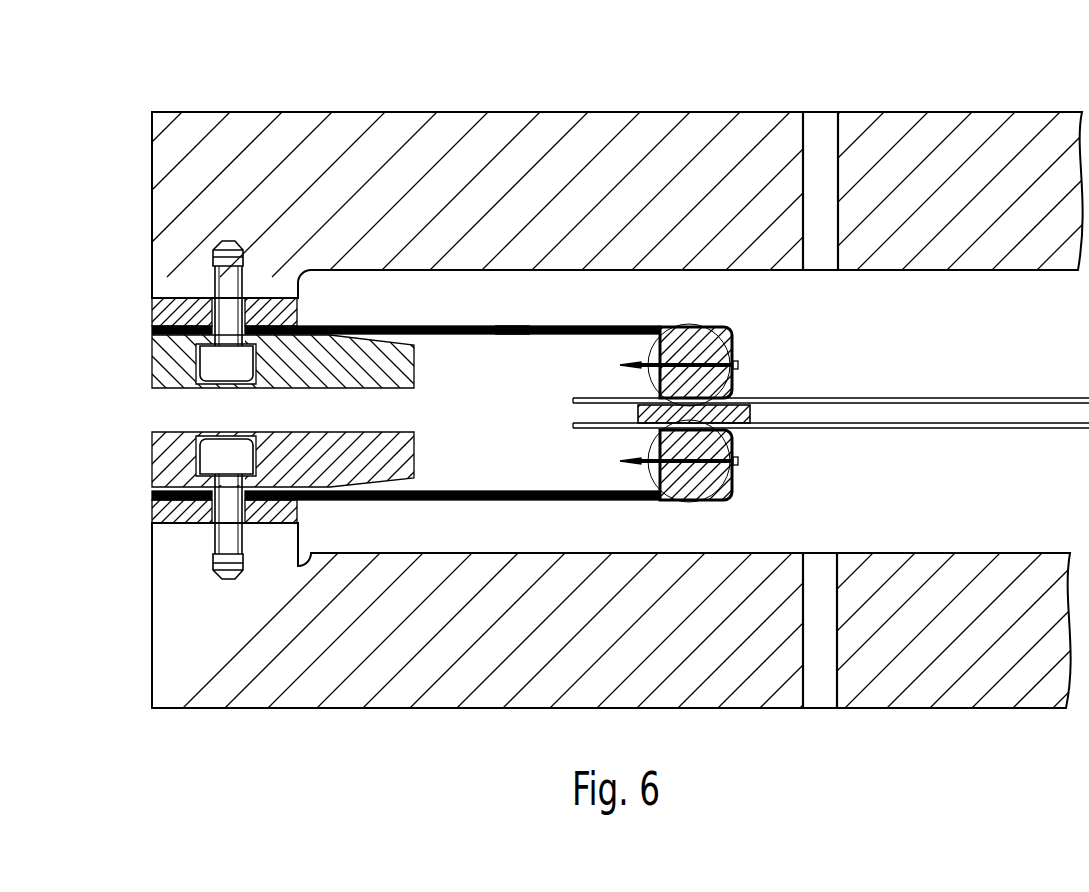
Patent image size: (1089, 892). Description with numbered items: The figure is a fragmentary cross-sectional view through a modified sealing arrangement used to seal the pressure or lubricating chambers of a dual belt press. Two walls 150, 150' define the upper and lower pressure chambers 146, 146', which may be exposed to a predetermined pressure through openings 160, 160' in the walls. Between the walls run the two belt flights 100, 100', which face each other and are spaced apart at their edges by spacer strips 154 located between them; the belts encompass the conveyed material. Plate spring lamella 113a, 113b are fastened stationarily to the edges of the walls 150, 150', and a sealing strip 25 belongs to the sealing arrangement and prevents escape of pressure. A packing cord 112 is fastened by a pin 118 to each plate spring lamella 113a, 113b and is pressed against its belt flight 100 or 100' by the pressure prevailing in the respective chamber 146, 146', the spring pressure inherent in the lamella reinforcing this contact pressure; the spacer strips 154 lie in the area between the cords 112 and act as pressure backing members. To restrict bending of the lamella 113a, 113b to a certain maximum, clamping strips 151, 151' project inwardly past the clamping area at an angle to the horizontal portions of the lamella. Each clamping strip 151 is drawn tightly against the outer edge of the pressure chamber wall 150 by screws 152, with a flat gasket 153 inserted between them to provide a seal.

The pressure chamber wall 150 is at (553, 205).
The pressure chamber wall 150' is at (620, 646).
The opening 160 is at (864, 163).
The opening 160' is at (838, 665).
The flat gasket 153 is at (152, 302).
The sealing strip 25 is at (345, 322).
The plate spring lamella 113a is at (510, 325).
The plate spring lamella 113b is at (512, 336).
The clamping strip 151 is at (286, 380).
The clamping strip 151' is at (293, 460).
The screw 152 is at (213, 367).
The packing cord 112 is at (733, 331).
The pin 118 is at (736, 385).
The spacer strip 154 is at (748, 415).
The belt flight 100 is at (831, 368).
The belt flight 100' is at (831, 456).
The pressure chamber 146 is at (894, 309).
The pressure chamber 146' is at (951, 515).